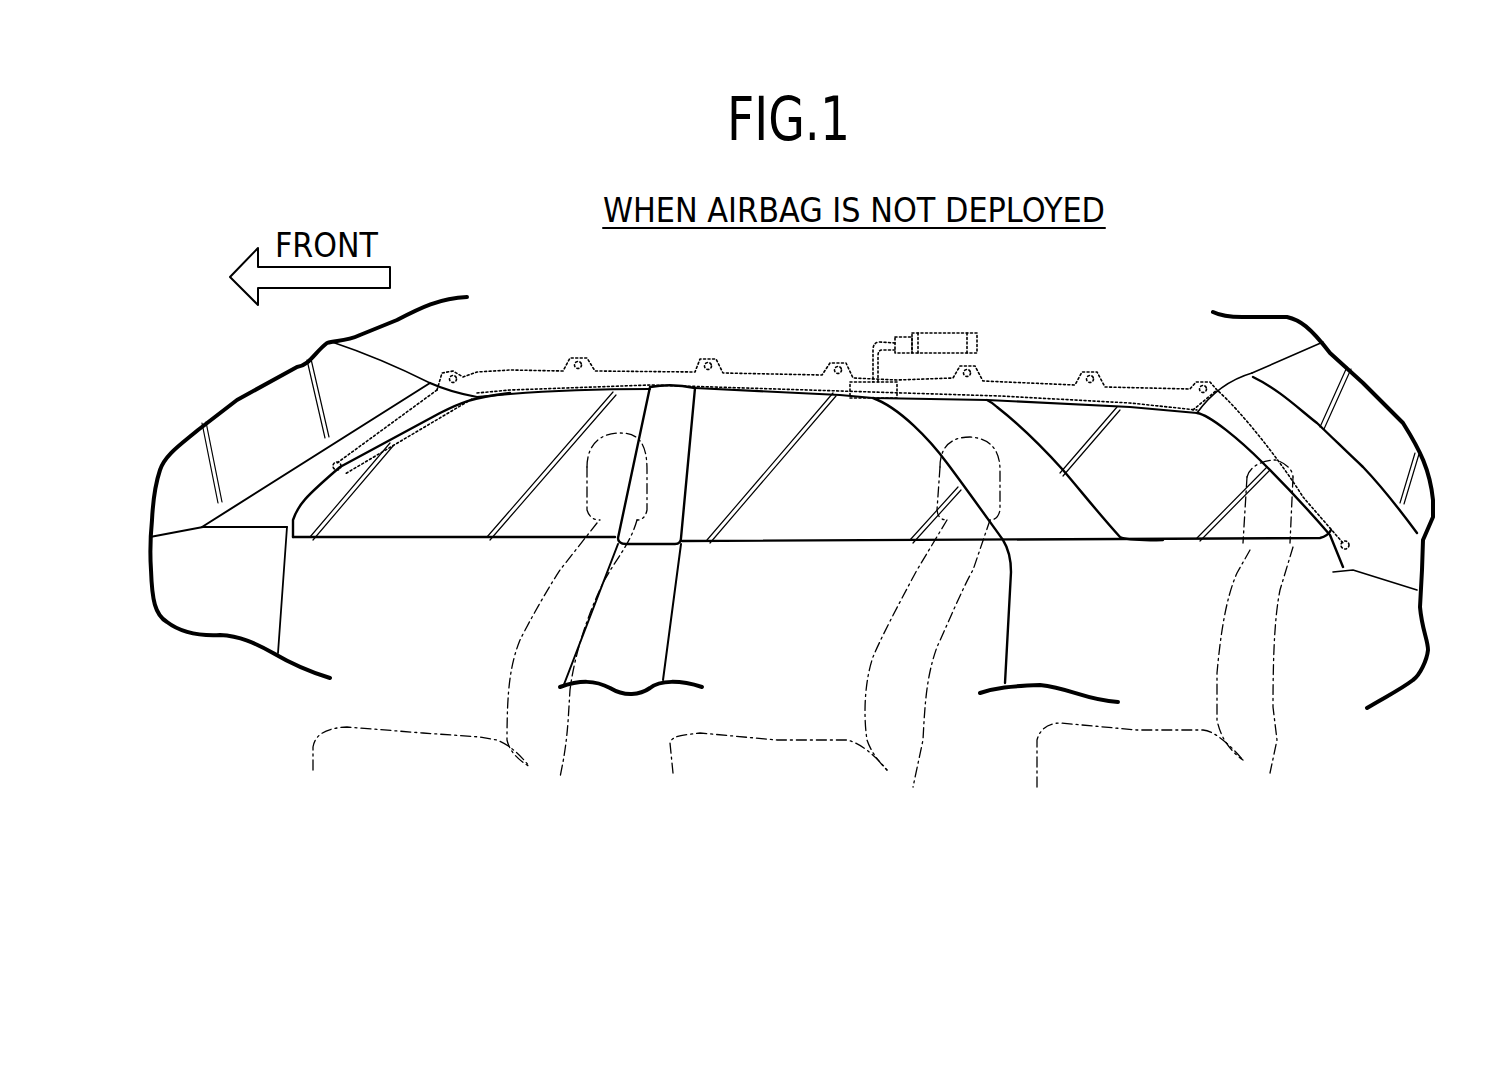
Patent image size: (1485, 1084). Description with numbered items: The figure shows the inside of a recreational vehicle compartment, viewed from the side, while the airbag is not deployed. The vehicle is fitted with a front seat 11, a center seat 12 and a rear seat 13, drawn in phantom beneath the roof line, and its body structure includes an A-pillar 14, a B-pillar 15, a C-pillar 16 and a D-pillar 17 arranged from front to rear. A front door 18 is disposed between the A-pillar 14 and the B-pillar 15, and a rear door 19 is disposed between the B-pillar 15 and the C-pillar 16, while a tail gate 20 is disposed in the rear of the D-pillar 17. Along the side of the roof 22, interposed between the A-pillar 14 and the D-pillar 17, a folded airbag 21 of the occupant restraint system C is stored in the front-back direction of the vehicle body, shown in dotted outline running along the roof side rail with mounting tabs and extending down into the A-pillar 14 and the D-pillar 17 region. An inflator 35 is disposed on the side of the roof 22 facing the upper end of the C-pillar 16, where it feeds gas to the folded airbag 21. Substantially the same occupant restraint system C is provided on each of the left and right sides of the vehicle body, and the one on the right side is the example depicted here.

The front seat 11 is at (433, 750).
The center seat 12 is at (763, 753).
The rear seat 13 is at (1137, 747).
The A-pillar 14 is at (293, 477).
The B-pillar 15 is at (673, 442).
The C-pillar 16 is at (947, 437).
The D-pillar 17 is at (1240, 427).
The front door 18 is at (443, 602).
The rear door 19 is at (811, 605).
The tail gate 20 is at (1377, 410).
The folded airbag 21 is at (628, 365).
The roof 22 is at (700, 323).
The inflator 35 is at (948, 330).
The occupant restraint system C is at (1021, 338).